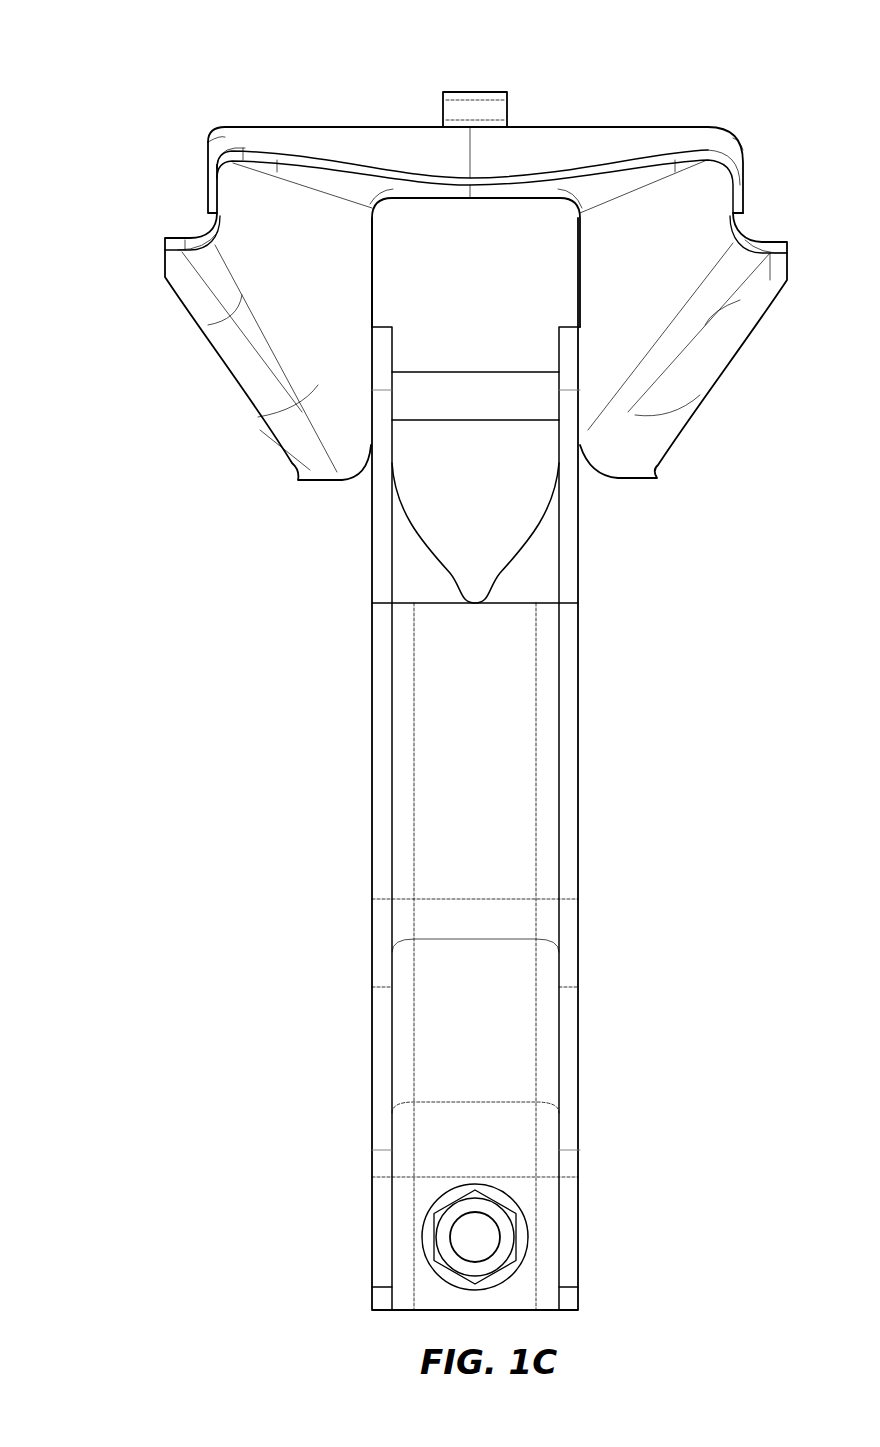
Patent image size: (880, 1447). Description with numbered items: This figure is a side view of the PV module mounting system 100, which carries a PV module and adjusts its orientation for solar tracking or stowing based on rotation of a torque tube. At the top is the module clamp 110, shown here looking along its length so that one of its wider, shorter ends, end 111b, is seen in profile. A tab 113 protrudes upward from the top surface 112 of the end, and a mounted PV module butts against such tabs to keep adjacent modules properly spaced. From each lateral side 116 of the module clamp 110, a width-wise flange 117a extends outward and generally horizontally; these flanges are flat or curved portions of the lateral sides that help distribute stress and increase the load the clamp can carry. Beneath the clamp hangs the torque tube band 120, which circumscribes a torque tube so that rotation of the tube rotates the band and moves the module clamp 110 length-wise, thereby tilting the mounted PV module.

The PV module mounting system 100 is at (412, 657).
The module clamp 110 is at (412, 272).
The end 111b is at (255, 140).
The top surface 112 is at (318, 127).
The tab 113 is at (470, 92).
The lateral side 116 is at (238, 200).
The width-wise flange 117a is at (228, 370).
The torque tube band 120 is at (383, 850).